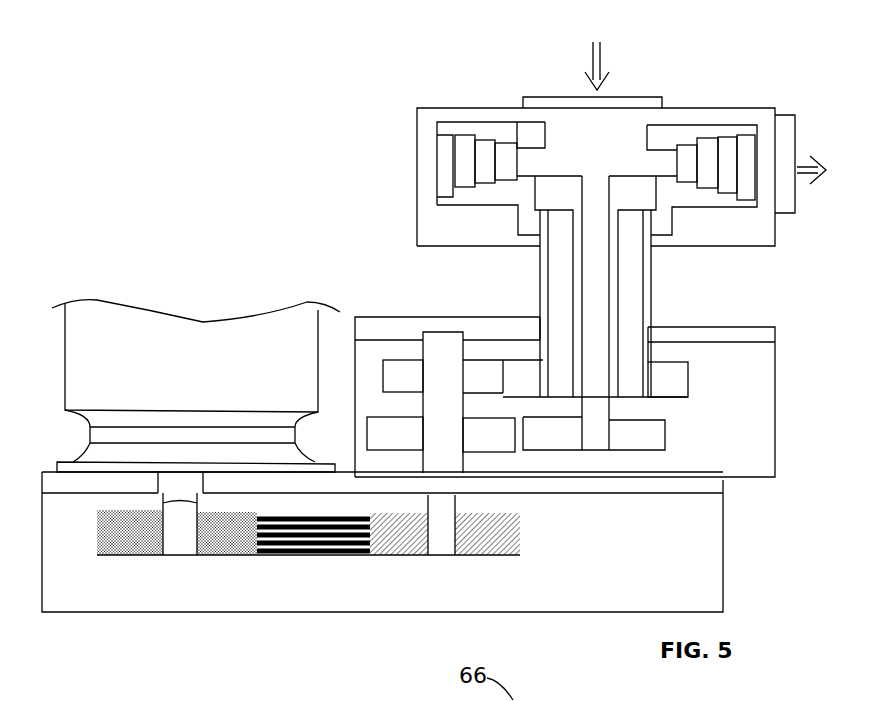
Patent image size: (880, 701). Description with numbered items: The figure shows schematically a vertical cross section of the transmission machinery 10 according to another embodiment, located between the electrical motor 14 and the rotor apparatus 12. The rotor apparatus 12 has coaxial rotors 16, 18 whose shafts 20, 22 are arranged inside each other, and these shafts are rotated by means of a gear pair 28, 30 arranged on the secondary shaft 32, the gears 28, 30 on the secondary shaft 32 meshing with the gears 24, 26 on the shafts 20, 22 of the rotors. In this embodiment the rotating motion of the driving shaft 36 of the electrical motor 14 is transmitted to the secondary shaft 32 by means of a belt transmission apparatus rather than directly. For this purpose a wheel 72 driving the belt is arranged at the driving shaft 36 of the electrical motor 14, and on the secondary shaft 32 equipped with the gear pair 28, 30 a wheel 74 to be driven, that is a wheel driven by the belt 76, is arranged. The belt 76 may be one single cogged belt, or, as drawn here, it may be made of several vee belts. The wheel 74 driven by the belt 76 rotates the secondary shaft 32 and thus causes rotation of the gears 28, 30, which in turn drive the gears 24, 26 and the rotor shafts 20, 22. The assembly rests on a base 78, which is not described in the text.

The transmission machinery 10 is at (392, 292).
The rotor apparatus 12 is at (419, 66).
The electrical motor 14 is at (158, 333).
The coaxial rotor 16 is at (490, 195).
The coaxial rotor 18 is at (517, 137).
The rotor shaft 20 is at (632, 284).
The rotor shaft 22 is at (593, 332).
The gear 24 is at (668, 379).
The gear 26 is at (594, 434).
The gear 28 is at (463, 376).
The gear 30 is at (441, 434).
The secondary shaft 32 is at (443, 443).
The driving shaft 36 is at (187, 538).
The wheel driving the belt 72 is at (143, 540).
The wheel to be driven 74 is at (505, 556).
The belt 76 is at (320, 558).
The base 78 is at (124, 608).